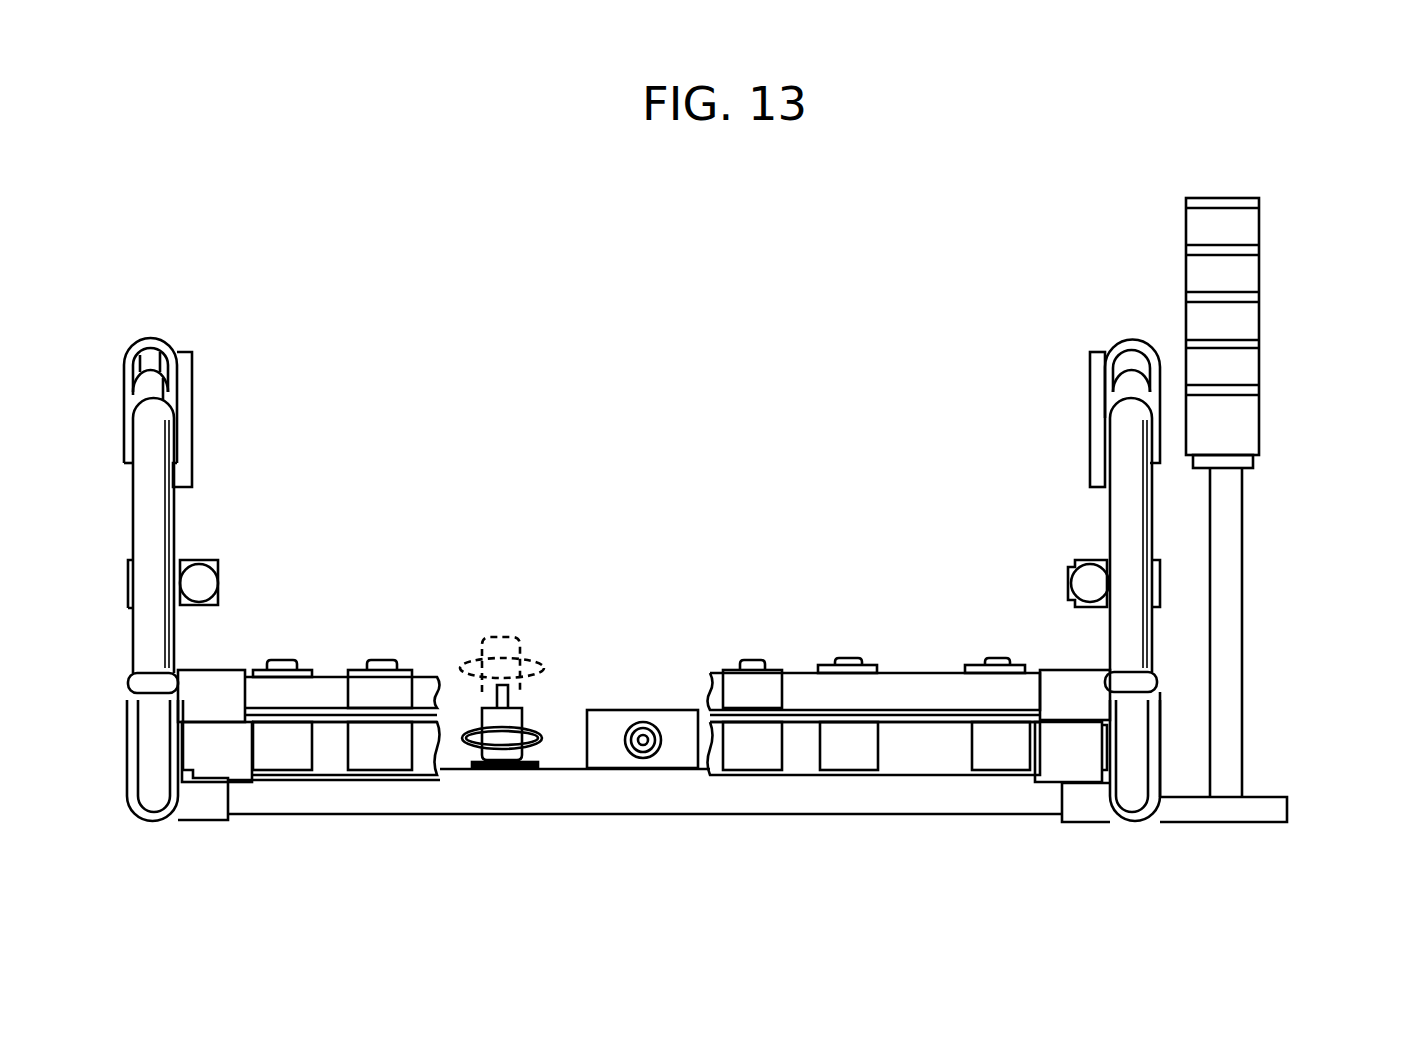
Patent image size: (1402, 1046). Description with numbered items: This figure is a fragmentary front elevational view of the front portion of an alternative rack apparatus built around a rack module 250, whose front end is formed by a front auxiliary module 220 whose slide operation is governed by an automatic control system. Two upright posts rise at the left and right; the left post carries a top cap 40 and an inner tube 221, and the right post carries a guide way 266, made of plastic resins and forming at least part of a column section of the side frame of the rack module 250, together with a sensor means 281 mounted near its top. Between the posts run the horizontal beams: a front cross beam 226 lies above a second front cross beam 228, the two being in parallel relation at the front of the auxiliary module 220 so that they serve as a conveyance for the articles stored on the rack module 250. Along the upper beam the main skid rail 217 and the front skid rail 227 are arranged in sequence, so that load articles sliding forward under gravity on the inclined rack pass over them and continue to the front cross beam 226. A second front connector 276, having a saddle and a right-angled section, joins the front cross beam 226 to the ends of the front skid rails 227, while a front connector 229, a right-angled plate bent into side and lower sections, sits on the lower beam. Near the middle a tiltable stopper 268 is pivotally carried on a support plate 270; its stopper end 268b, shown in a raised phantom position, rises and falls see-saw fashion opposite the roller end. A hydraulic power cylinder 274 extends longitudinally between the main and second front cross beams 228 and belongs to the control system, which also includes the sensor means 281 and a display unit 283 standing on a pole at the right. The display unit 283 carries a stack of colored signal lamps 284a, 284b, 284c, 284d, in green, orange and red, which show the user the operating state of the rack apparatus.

The post top cap 40 is at (132, 343).
The front auxiliary module 220 is at (133, 487).
The inner tube of support post 221 is at (163, 510).
The main skid rail 217 is at (280, 660).
The front cross beam 226 is at (320, 690).
The front skid rail 227 is at (387, 660).
The rack module 250 is at (657, 473).
The tiltable stopper 268 is at (470, 655).
The stopper end 268b is at (505, 685).
The support plate 270 is at (532, 770).
The front connector 229 is at (612, 752).
The hydraulic power cylinder 274 is at (643, 735).
The second front connector 276 is at (775, 677).
The front cross beam 228 is at (850, 798).
The sensor means 281 is at (1097, 416).
The guide way 266 is at (1068, 583).
The display unit 283 is at (1238, 198).
The colored signal lamp 284a is at (1243, 228).
The colored signal lamp 284b is at (1243, 273).
The colored signal lamp 284c is at (1243, 327).
The colored signal lamp 284d is at (1243, 373).